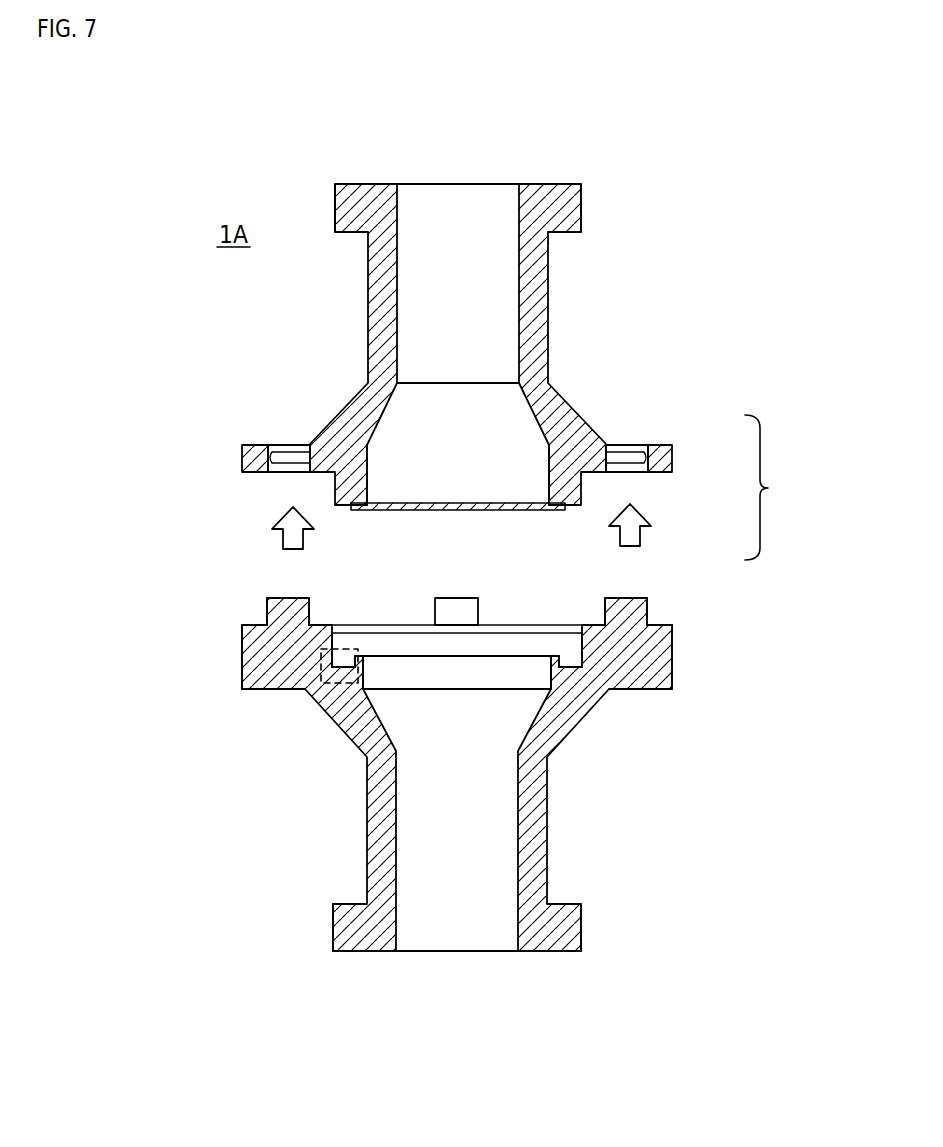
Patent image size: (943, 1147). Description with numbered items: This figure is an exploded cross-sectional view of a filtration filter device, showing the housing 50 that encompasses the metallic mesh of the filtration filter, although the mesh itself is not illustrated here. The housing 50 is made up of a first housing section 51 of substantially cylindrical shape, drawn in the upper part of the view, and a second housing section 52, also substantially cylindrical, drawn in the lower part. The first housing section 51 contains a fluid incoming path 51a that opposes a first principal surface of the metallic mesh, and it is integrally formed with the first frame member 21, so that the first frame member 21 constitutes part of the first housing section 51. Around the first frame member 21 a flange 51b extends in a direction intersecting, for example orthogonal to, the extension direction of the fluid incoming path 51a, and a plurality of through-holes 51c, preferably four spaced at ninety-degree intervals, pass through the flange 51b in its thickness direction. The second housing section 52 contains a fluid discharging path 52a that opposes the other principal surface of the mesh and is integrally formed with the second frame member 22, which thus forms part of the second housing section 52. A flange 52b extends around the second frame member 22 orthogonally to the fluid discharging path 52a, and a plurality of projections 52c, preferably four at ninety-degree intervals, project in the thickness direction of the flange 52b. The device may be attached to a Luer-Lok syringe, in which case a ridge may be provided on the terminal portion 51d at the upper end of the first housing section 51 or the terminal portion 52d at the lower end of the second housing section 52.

The first frame member 21 is at (348, 509).
The second frame member 22 is at (360, 652).
The housing 50 is at (771, 487).
The first housing section 51 is at (592, 424).
The fluid incoming path 51a is at (513, 483).
The flange 51b is at (250, 461).
The through-holes 51c is at (290, 473).
The terminal portion 51d is at (583, 203).
The second housing section 52 is at (660, 634).
The fluid discharging path 52a is at (502, 667).
The flange 52b is at (250, 660).
The projections 52c is at (283, 603).
The terminal portion 52d is at (580, 925).